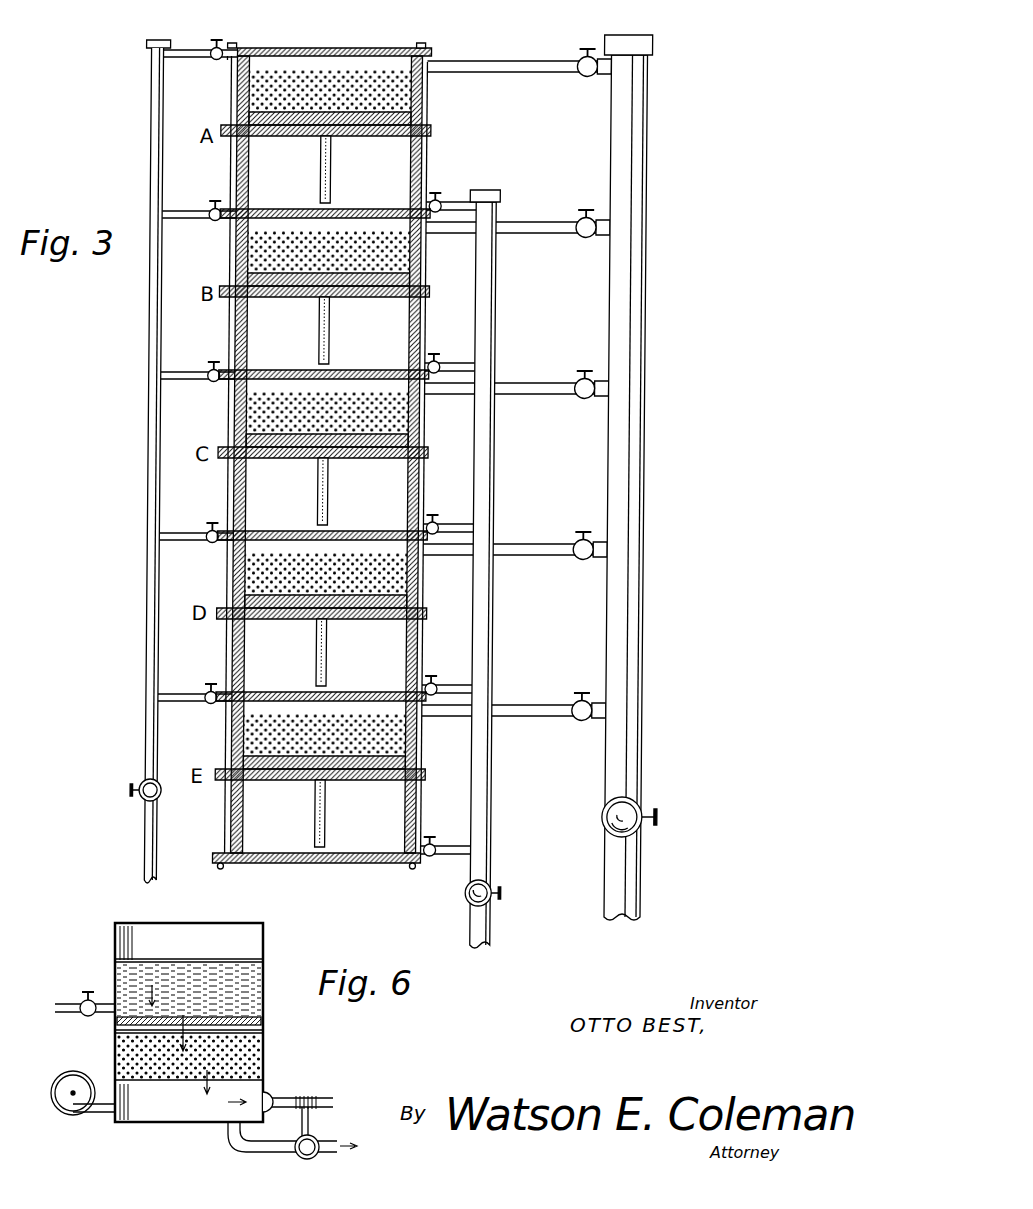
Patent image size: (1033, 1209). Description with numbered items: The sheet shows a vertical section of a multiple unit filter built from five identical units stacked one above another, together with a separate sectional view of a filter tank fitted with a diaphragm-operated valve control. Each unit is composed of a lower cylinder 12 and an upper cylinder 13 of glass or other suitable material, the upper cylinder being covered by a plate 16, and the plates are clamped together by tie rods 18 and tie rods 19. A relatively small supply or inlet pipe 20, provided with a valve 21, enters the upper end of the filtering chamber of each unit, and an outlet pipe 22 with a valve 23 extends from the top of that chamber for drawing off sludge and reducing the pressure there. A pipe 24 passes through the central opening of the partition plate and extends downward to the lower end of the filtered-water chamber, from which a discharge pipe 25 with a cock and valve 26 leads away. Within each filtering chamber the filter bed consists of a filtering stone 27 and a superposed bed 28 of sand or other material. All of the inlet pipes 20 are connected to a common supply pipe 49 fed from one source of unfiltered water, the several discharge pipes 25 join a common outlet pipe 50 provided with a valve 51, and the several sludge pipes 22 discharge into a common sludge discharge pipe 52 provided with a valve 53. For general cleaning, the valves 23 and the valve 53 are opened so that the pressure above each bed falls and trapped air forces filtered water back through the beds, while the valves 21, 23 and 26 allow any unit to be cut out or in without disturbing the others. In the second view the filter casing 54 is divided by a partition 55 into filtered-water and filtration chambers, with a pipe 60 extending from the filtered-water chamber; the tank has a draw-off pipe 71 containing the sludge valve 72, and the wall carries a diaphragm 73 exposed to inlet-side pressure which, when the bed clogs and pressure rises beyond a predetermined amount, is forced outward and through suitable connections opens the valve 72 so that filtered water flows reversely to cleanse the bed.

In FIG. 3, the cylinder 12 is at (250, 178).
In FIG. 3, the cylinder 13 is at (255, 82).
In FIG. 3, the plate 16 is at (343, 49).
In FIG. 3, the tie rods 18 is at (218, 87).
In FIG. 3, the tie rods 19 is at (232, 172).
In FIG. 3, the supply or inlet pipe 20 is at (197, 50).
In FIG. 3, the valve 21 is at (217, 62).
In FIG. 3, the outlet pipe 22 is at (504, 66).
In FIG. 3, the valve 23 is at (582, 78).
In FIG. 3, the pipe 24 is at (334, 178).
In FIG. 3, the discharge pipe 25 is at (462, 200).
In FIG. 3, the cock and valve 26 is at (438, 194).
In FIG. 3, the filtering stone 27 is at (400, 125).
In FIG. 3, the bed 28 is at (395, 96).
In FIG. 3, the common supply pipe 49 is at (157, 362).
In FIG. 3, the common outlet pipe 50 is at (498, 493).
In FIG. 3, the valve 51 is at (473, 896).
In FIG. 3, the common sludge discharge pipe 52 is at (650, 456).
In FIG. 3, the valve 53 is at (612, 812).
In FIG. 6, the filter casing 54 is at (265, 1046).
In FIG. 6, the partition 55 is at (240, 1020).
In FIG. 6, the pipe 60 is at (105, 1002).
In FIG. 6, the draw-off pipe 71 is at (275, 1142).
In FIG. 6, the valve 72 is at (316, 1139).
In FIG. 6, the diaphragm 73 is at (275, 1097).